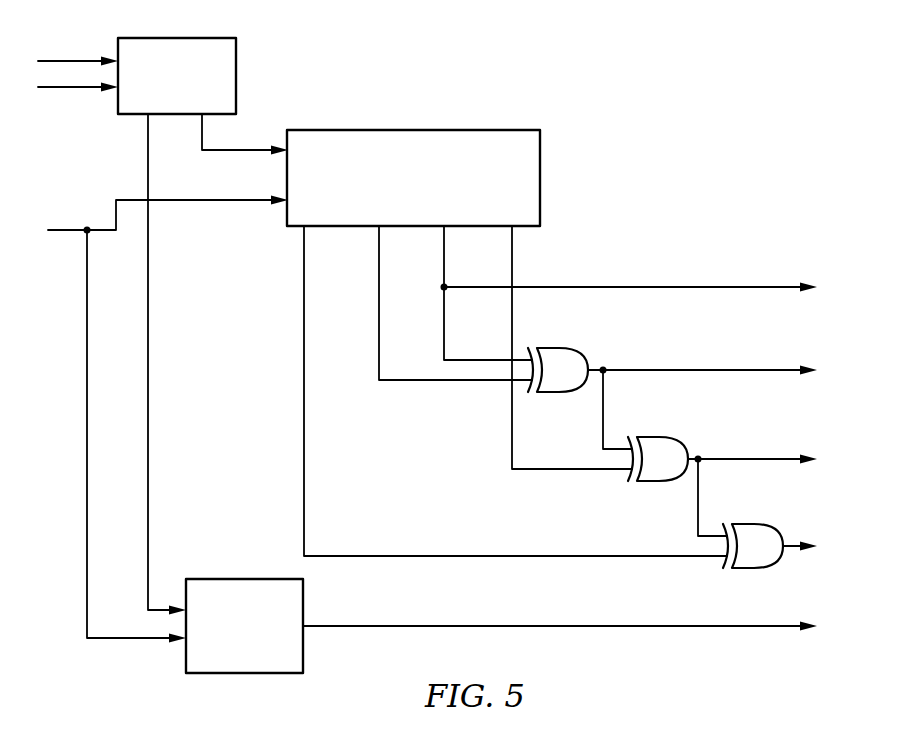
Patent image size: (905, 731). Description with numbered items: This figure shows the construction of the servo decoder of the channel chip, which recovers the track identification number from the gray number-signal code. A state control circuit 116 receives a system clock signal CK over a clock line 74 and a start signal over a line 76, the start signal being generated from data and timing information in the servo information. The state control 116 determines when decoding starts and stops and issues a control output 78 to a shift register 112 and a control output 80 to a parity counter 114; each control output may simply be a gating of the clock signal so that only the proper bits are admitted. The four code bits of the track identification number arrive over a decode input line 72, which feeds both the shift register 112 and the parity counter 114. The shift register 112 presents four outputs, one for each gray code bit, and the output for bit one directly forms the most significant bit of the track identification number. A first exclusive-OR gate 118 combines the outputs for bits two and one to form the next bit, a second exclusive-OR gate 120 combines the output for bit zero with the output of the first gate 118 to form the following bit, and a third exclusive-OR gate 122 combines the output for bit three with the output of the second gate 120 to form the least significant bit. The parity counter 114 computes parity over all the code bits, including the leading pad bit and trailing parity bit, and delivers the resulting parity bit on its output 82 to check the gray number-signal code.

The decode input line 72 is at (60, 230).
The clock line 74 is at (53, 60).
The start signal line 76 is at (55, 88).
The control output for the shift register 78 is at (202, 127).
The control output for the parity counter 80 is at (148, 278).
The parity bit output 82 is at (680, 627).
The shift register 112 is at (393, 130).
The parity counter 114 is at (243, 579).
The state control circuit 116 is at (200, 37).
The first exclusive-OR gate 118 is at (550, 350).
The second exclusive-OR gate 120 is at (663, 437).
The third exclusive-OR gate 122 is at (745, 525).